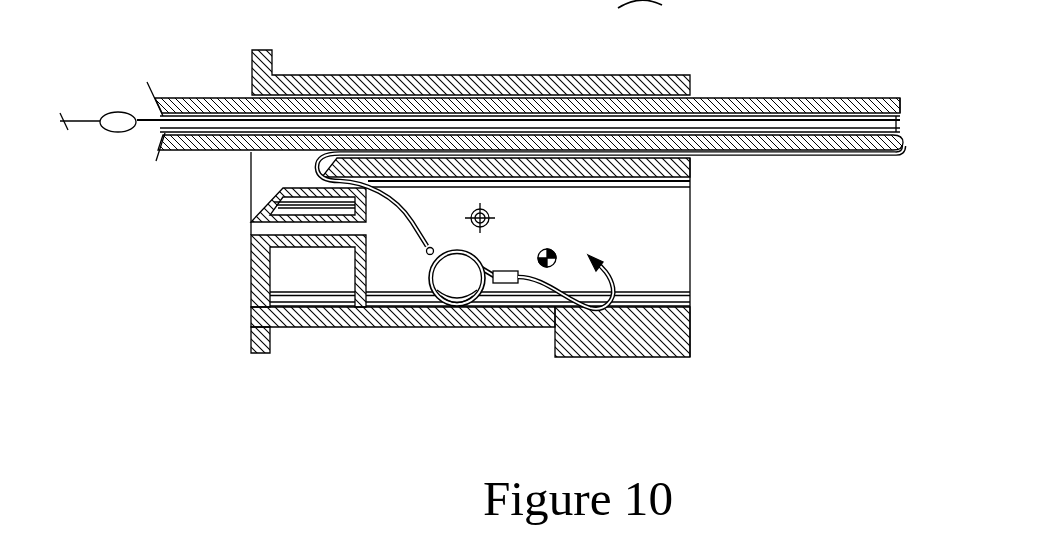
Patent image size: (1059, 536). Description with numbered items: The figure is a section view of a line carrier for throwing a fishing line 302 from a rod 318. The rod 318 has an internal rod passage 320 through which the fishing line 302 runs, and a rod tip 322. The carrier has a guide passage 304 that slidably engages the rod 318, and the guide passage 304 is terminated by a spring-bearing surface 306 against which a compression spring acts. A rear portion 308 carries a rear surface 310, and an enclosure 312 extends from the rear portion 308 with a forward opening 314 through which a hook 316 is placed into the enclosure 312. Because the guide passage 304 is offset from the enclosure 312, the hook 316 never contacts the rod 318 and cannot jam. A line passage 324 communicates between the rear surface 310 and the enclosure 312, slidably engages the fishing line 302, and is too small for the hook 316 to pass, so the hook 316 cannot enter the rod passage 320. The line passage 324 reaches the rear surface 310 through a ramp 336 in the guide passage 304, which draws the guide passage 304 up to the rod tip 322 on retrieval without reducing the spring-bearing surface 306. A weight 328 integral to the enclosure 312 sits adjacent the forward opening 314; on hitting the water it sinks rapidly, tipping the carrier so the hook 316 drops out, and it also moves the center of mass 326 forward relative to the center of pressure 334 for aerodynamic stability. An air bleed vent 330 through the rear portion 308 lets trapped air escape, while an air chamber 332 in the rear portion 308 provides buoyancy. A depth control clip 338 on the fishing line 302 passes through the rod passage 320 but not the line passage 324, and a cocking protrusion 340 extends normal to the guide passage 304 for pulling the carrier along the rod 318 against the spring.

The fishing line 302 is at (902, 156).
The guide passage 304 is at (267, 152).
The spring-bearing surface 306 is at (253, 63).
The rear portion 308 is at (300, 327).
The rear surface 310 is at (250, 308).
The enclosure 312 is at (668, 292).
The forward opening 314 is at (681, 247).
The hook 316 is at (448, 305).
The rod 318 is at (192, 96).
The rod passage 320 is at (195, 137).
The rod tip 322 is at (887, 101).
The line passage 324 is at (368, 182).
The center of mass 326 is at (548, 267).
The weight 328 is at (657, 358).
The air bleed vent 330 is at (257, 230).
The air chamber 332 is at (331, 300).
The center of pressure 334 is at (480, 226).
The ramp 336 is at (267, 193).
The depth control clip 338 is at (128, 121).
The cocking protrusion 340 is at (257, 349).